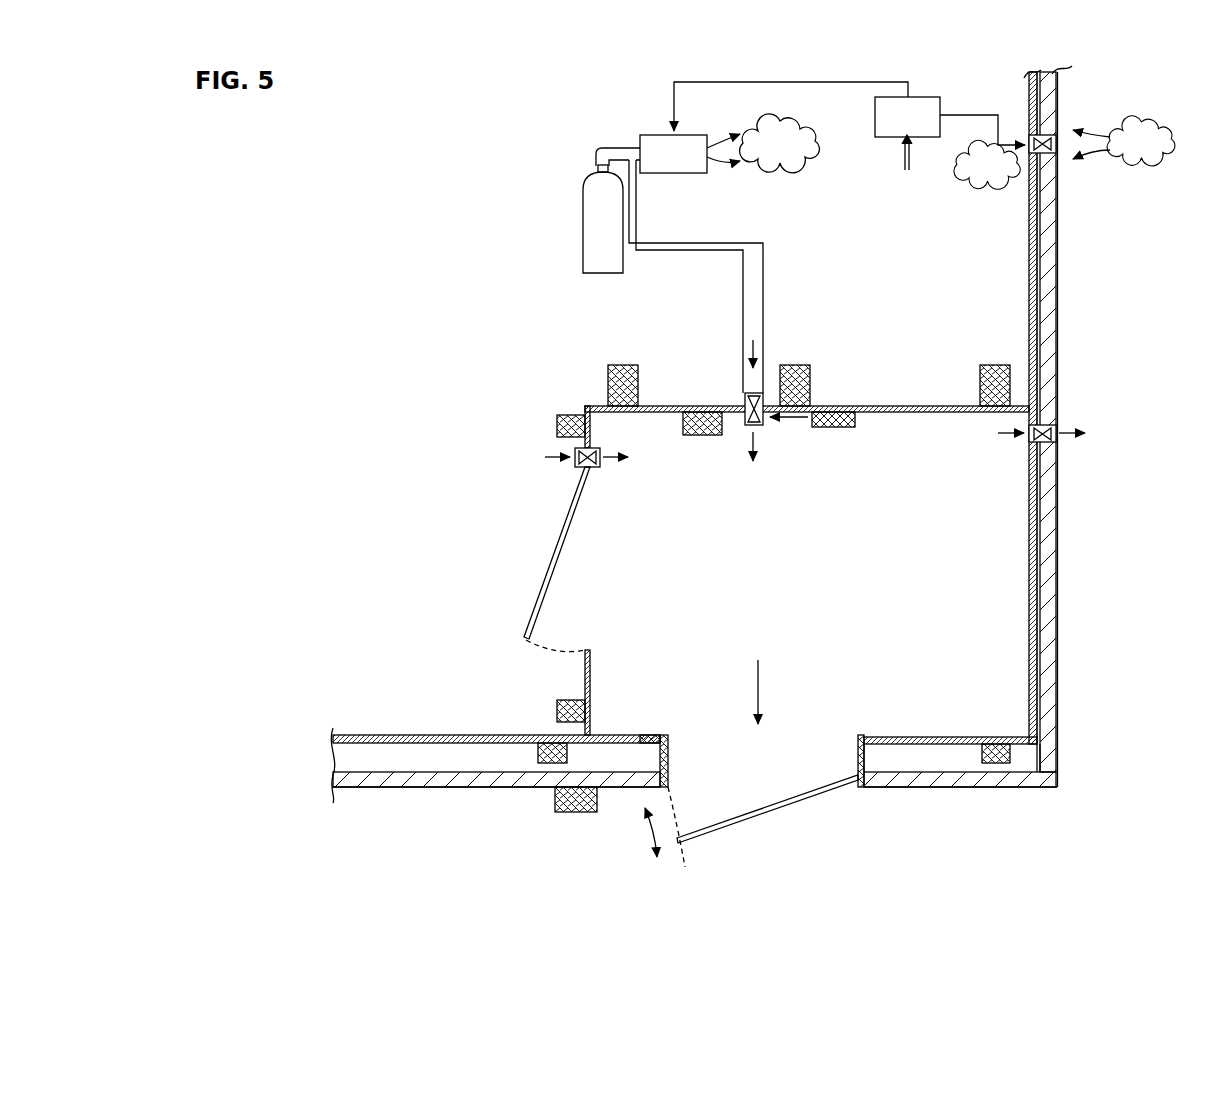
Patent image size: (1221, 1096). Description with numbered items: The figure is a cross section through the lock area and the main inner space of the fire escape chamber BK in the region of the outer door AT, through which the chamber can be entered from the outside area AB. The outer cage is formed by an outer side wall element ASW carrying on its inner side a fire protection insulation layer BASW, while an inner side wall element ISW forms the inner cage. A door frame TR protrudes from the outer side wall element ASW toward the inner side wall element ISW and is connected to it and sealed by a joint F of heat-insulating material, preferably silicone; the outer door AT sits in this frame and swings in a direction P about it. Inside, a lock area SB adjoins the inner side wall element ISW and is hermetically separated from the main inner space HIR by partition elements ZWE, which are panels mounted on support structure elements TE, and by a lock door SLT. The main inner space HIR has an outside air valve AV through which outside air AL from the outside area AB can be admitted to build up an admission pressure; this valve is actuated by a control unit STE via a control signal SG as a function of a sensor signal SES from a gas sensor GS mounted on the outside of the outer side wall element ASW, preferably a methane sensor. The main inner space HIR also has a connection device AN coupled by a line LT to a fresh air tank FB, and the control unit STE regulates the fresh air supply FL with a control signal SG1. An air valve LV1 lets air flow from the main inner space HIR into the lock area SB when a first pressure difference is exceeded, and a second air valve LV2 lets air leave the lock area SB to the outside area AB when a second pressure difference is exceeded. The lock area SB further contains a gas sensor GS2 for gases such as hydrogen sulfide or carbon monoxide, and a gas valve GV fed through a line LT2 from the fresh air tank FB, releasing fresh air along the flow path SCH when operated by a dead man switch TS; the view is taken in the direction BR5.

The fire escape chamber BK is at (330, 246).
The line LT is at (620, 147).
The fresh air tank FB is at (618, 226).
The connection device AN is at (688, 166).
The fresh air supply FL is at (796, 154).
The control signal SG1 is at (785, 72).
The control unit STE is at (928, 128).
The control signal SG is at (968, 115).
The sensor signal SES is at (902, 158).
The outside air AL is at (1003, 176).
The outside air valve AV is at (1057, 153).
The inner side wall element ISW is at (1029, 216).
The main inner space HIR is at (1002, 283).
The line LT2 is at (765, 285).
The support structure element TE is at (622, 365).
The gas valve GV is at (745, 396).
The partition element ZWE is at (910, 405).
The gas sensor GS2 is at (705, 435).
The flow / throttle SCH is at (790, 420).
The switch TS is at (835, 427).
The air valve LV1 is at (577, 467).
The second air valve LV2 is at (1028, 441).
The lock door SLT is at (556, 548).
The lock area SB is at (1003, 505).
The fire protection insulation layer BASW is at (1050, 560).
The outer side wall element ASW is at (1058, 638).
The joint F is at (650, 735).
The door frame TR is at (672, 760).
The fire area 5 BR5 is at (760, 690).
The outer door AT is at (750, 817).
The pivot movement P is at (645, 830).
The gas sensor GS is at (575, 800).
The outside area AB is at (1196, 749).